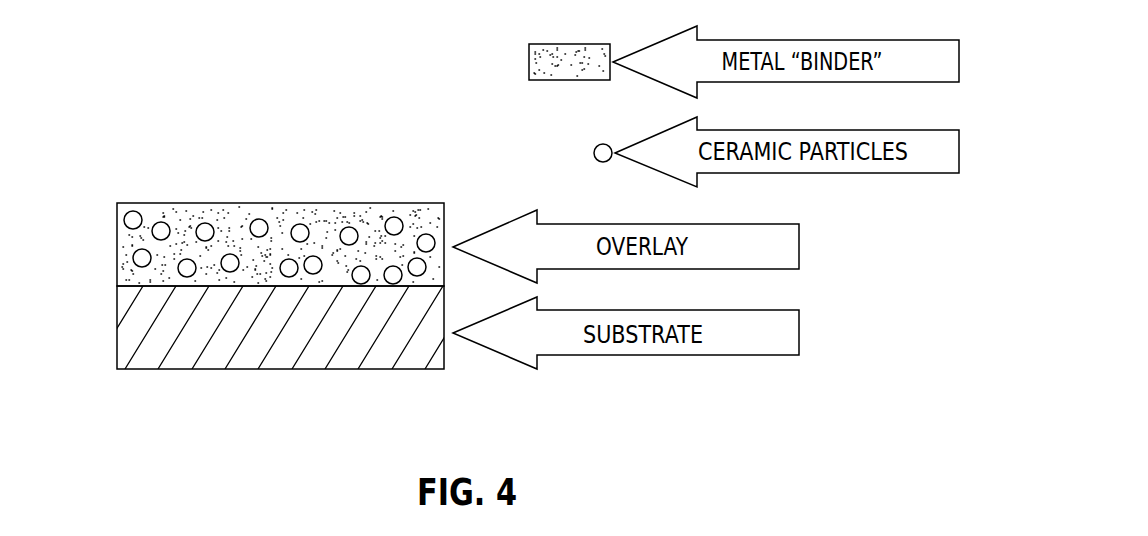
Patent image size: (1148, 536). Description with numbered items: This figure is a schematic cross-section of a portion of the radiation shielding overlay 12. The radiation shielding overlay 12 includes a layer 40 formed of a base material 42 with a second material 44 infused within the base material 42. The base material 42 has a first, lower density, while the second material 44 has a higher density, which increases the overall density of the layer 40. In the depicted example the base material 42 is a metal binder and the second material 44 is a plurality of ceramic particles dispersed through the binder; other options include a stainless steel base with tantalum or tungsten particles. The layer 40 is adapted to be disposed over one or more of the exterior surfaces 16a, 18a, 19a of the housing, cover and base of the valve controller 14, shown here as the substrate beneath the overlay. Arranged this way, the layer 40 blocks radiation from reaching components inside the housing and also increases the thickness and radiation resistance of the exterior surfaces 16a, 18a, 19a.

The radiation shielding overlay 12 is at (85, 271).
The valve controller 14 is at (117, 222).
The layer 40 is at (420, 204).
The base material 42 is at (278, 243).
The second material 44 is at (206, 230).
The exterior surface of the housing 16a is at (284, 360).
The exterior surface of the cover 18a is at (284, 360).
The exterior surface of the base 19a is at (270, 369).